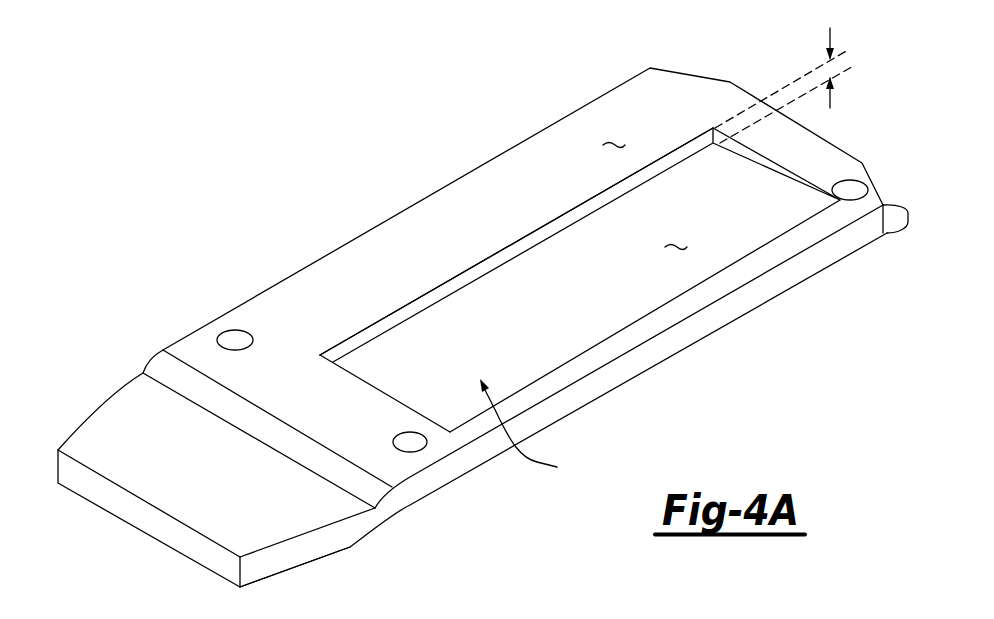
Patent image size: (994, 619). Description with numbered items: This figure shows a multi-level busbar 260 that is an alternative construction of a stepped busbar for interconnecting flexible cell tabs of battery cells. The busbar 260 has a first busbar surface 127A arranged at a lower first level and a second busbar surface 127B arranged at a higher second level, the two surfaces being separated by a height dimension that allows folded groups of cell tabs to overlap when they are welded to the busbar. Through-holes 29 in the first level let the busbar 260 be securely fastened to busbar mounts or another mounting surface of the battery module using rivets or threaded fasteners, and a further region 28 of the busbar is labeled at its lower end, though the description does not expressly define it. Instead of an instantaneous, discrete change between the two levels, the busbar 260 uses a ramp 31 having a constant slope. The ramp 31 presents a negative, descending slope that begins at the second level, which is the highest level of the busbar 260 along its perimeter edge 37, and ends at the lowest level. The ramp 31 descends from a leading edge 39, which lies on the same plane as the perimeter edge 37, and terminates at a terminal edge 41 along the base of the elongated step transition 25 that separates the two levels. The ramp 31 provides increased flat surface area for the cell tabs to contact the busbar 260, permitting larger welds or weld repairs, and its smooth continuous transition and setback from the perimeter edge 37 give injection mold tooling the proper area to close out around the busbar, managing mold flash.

The multi-level busbar 260 is at (474, 295).
The elongated step transition 25 is at (535, 295).
The mounting tab 28 is at (225, 468).
The through-holes 29 is at (552, 303).
The ramp 31 is at (531, 431).
The perimeter edge 37 is at (629, 356).
The leading edge 39 is at (645, 317).
The terminal edge 41 is at (516, 179).
The first busbar surface 127A is at (580, 219).
The second busbar surface 127B is at (516, 241).